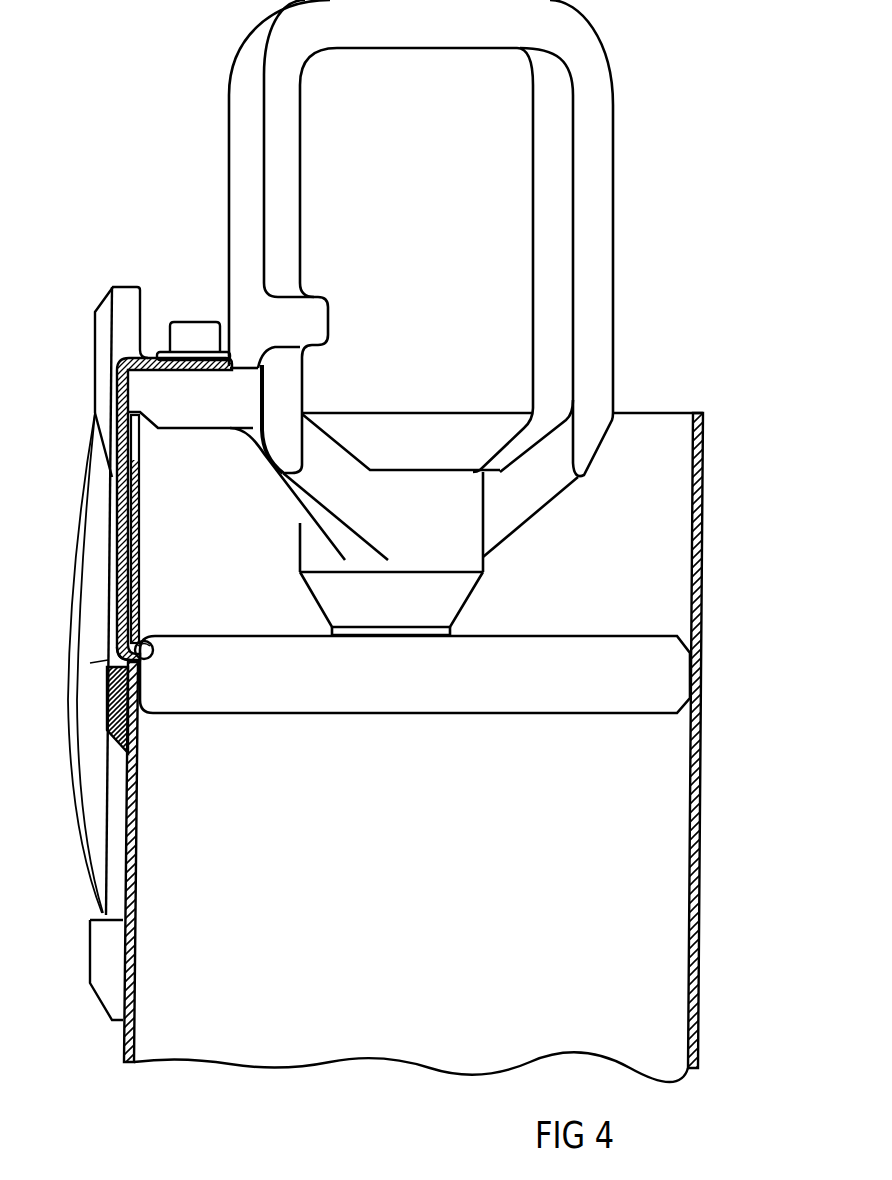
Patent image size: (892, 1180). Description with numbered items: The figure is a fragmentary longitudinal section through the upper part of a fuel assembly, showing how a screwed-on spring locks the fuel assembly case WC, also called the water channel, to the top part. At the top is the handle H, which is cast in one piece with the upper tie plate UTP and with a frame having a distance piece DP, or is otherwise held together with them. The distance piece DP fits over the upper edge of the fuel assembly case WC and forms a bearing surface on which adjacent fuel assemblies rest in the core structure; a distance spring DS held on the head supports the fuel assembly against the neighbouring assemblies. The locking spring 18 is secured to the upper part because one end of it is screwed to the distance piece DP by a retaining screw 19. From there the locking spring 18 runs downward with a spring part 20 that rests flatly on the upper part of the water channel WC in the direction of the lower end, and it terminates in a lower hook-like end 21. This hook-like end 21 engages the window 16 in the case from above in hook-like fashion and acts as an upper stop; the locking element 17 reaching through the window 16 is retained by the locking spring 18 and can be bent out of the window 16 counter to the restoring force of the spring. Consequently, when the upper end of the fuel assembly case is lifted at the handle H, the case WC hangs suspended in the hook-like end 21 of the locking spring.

The handle H is at (600, 228).
The distance piece DP is at (128, 295).
The distance spring DS is at (77, 762).
The retaining screw 19 is at (193, 333).
The locking spring 18 is at (120, 366).
The spring part 20 is at (118, 513).
The window 16 is at (133, 585).
The locking element 17 is at (142, 637).
The hook-like end 21 is at (125, 658).
The upper tie plate UTP is at (485, 693).
The fuel assembly case WC is at (123, 958).